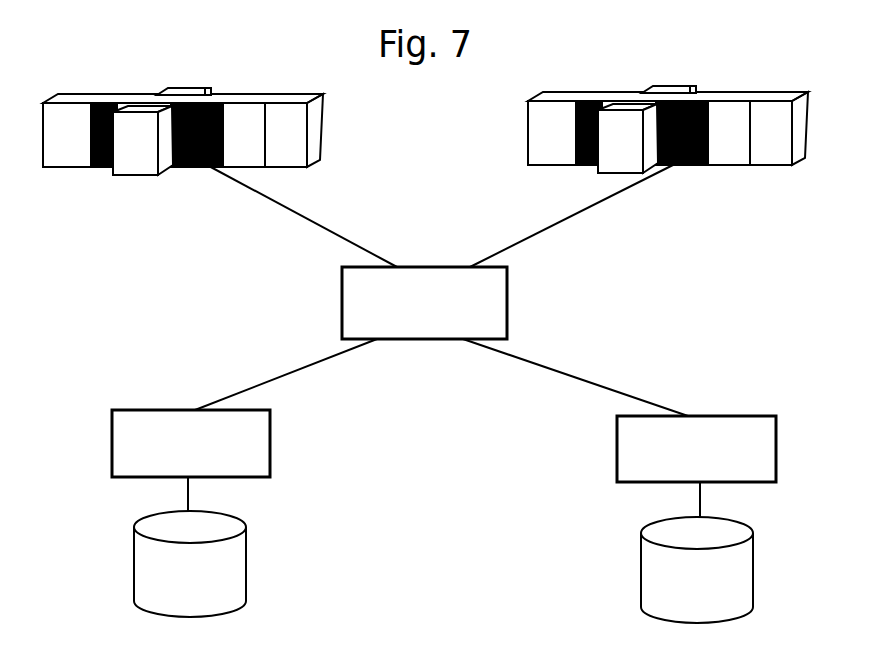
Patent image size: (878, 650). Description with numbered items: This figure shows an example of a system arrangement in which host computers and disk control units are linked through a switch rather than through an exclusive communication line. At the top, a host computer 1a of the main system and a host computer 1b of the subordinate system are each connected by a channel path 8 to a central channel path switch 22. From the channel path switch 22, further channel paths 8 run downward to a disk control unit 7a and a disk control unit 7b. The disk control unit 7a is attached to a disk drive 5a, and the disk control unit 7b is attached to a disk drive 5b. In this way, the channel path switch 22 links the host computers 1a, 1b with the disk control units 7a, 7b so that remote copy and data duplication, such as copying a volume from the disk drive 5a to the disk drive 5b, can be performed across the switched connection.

The host computer 1a is at (323, 100).
The host computer 1b is at (808, 98).
The channel path 8 is at (298, 220).
The channel path switch 22 is at (508, 277).
The disk control unit 7a is at (270, 440).
The disk control unit 7b is at (776, 440).
The disk drive 5a is at (247, 553).
The disk drive 5b is at (753, 555).